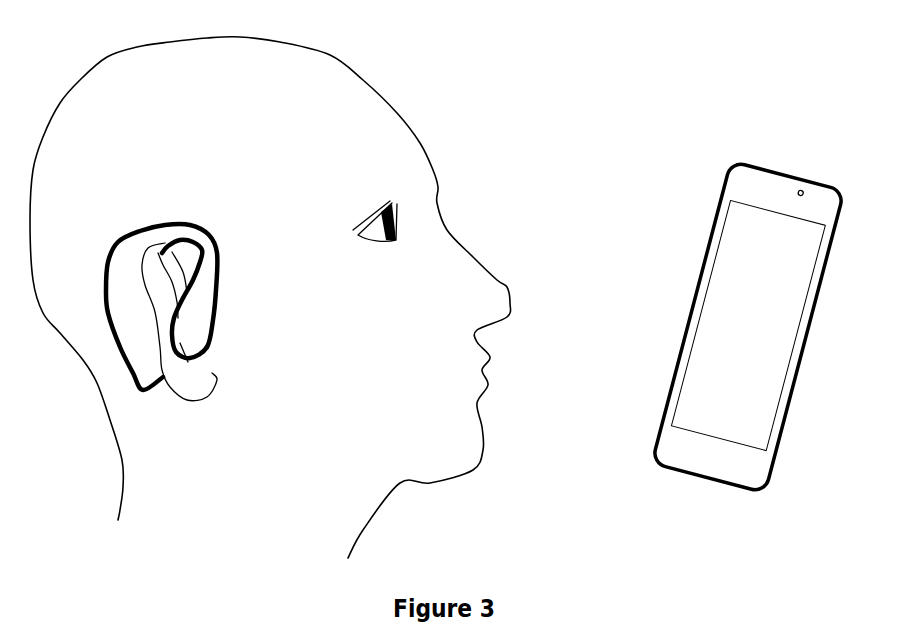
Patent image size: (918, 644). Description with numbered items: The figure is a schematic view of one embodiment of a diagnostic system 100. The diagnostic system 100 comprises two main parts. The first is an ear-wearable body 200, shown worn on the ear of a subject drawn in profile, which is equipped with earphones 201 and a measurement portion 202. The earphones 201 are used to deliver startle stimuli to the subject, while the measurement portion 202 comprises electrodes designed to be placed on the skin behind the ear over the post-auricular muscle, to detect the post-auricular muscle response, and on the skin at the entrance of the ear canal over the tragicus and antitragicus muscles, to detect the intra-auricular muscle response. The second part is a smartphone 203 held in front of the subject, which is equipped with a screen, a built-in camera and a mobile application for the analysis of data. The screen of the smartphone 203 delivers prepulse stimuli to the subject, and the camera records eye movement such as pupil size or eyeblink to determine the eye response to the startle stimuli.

The diagnostic system 100 is at (627, 78).
The ear-wearable body 200 is at (154, 289).
The earphones 201 is at (190, 327).
The measurement portion 202 is at (138, 327).
The smartphone 203 is at (748, 359).